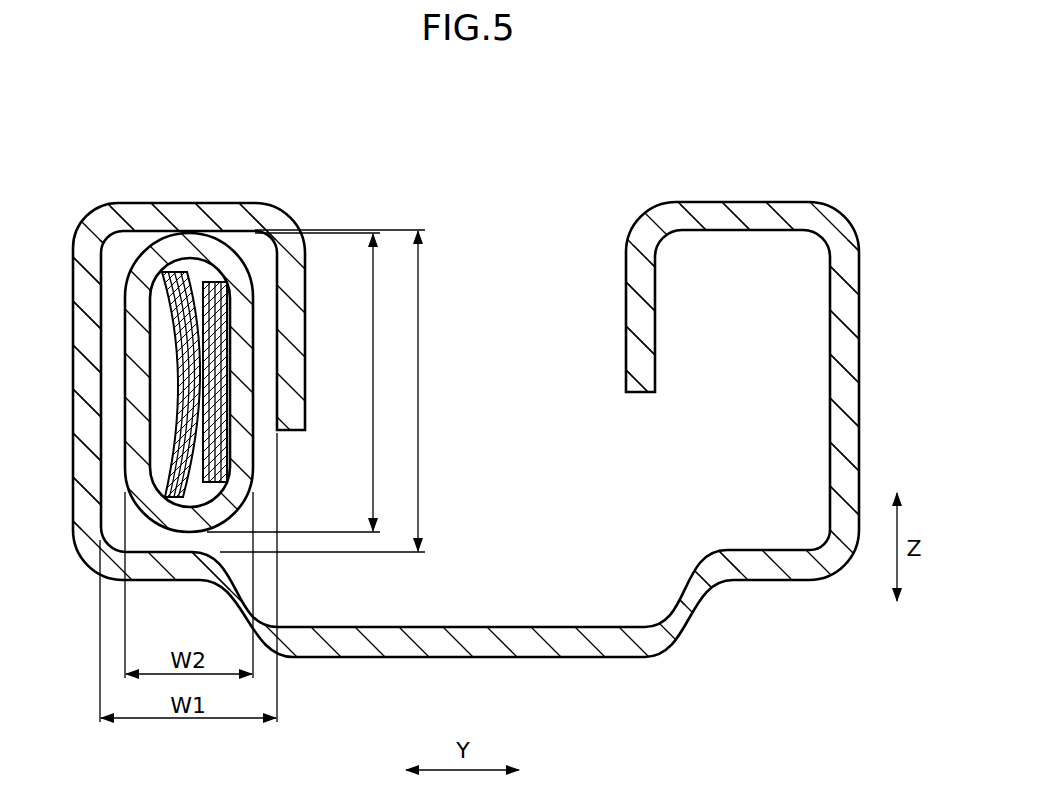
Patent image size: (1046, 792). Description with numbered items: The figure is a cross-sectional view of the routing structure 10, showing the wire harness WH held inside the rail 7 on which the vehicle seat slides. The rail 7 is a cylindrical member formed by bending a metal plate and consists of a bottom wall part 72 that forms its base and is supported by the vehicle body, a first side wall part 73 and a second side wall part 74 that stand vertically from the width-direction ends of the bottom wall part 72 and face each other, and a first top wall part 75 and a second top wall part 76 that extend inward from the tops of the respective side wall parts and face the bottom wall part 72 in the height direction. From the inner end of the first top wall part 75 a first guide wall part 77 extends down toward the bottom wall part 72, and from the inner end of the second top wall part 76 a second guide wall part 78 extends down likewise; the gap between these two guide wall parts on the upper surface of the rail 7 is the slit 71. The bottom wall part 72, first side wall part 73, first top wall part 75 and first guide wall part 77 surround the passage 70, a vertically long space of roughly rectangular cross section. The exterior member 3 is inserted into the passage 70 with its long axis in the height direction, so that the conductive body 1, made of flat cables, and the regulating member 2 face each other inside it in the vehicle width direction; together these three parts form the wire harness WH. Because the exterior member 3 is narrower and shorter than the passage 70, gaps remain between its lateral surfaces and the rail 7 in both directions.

The conductive body 1 is at (214, 275).
The regulating member 2 is at (177, 262).
The exterior member 3 is at (248, 238).
The rail 7 is at (715, 200).
The routing structure 10 is at (352, 143).
The passage 70 is at (118, 328).
The slit 71 is at (465, 263).
The bottom wall part 72 is at (465, 657).
The first side wall part 73 is at (72, 430).
The second side wall part 74 is at (859, 430).
The first top wall part 75 is at (142, 203).
The second top wall part 76 is at (770, 202).
The first guide wall part 77 is at (305, 330).
The second guide wall part 78 is at (626, 332).
The wire harness WH is at (118, 373).